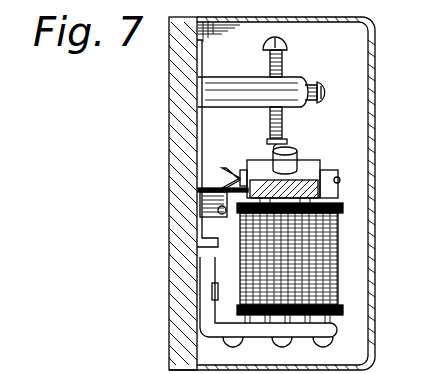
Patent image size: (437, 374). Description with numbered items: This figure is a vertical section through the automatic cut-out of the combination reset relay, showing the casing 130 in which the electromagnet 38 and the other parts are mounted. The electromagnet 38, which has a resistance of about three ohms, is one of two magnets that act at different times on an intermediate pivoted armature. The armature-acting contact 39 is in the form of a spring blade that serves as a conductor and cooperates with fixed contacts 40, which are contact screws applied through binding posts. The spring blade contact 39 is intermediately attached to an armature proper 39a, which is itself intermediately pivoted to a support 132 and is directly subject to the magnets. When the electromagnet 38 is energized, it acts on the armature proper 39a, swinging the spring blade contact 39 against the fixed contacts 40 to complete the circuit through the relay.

The casing 130 is at (186, 243).
The fixed contacts 40 is at (283, 130).
The armature-acting contact 39 is at (288, 143).
The armature proper 39a is at (224, 173).
The support 132 is at (338, 194).
The electromagnet 38 is at (323, 258).